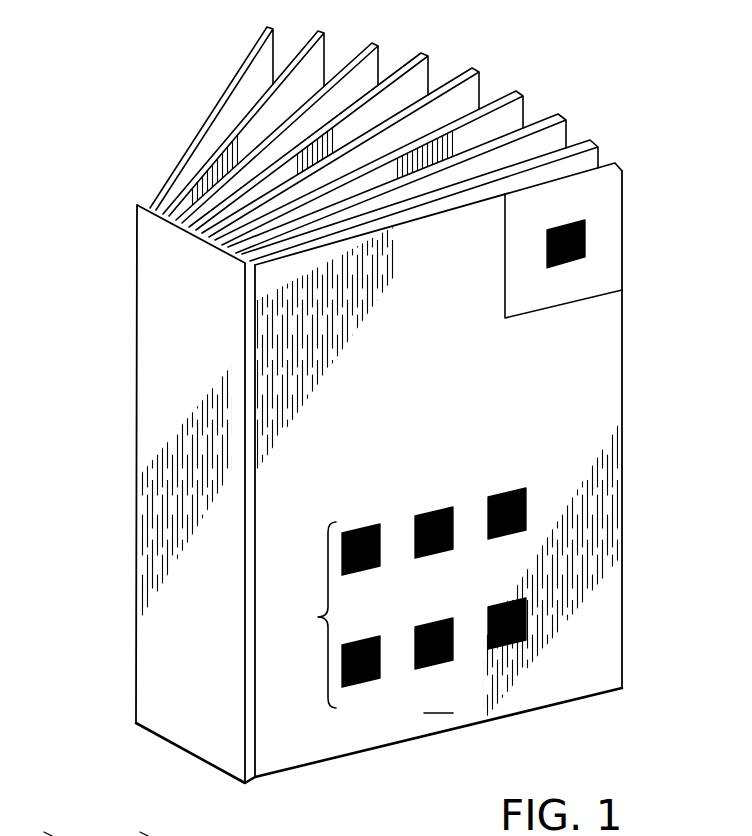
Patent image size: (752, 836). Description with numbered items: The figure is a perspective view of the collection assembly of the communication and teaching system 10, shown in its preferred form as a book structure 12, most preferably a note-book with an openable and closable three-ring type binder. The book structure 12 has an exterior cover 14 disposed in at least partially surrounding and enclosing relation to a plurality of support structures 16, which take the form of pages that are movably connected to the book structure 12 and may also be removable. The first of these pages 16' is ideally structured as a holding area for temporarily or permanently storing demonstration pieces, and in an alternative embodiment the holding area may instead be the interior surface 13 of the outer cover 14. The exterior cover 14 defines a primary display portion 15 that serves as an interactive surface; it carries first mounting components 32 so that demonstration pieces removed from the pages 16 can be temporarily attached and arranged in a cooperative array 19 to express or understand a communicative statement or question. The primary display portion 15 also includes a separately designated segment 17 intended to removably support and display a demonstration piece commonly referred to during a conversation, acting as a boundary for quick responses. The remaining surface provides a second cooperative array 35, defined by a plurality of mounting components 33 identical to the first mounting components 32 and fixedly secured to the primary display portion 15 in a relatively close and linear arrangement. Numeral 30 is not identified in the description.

The communication and teaching system 10 is at (638, 57).
The book structure 12 is at (102, 186).
The interior surface of the outer cover 13 is at (576, 655).
The exterior cover 14 is at (626, 420).
The primary display portion 15 is at (440, 699).
The support structures 16 is at (366, 132).
The first page 16' is at (470, 176).
The separately designated segment 17 is at (592, 298).
The cooperative array 19 is at (311, 615).
The connector 30 is at (81, 820).
The first mounting components 32 is at (586, 240).
The mounting components 33 is at (415, 522).
The second cooperative array 35 is at (452, 535).